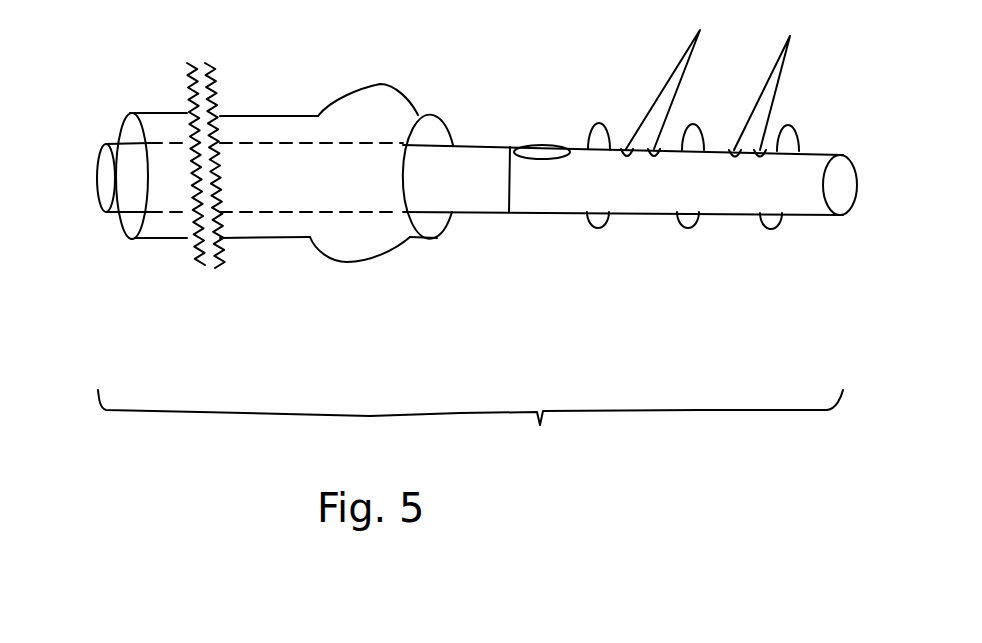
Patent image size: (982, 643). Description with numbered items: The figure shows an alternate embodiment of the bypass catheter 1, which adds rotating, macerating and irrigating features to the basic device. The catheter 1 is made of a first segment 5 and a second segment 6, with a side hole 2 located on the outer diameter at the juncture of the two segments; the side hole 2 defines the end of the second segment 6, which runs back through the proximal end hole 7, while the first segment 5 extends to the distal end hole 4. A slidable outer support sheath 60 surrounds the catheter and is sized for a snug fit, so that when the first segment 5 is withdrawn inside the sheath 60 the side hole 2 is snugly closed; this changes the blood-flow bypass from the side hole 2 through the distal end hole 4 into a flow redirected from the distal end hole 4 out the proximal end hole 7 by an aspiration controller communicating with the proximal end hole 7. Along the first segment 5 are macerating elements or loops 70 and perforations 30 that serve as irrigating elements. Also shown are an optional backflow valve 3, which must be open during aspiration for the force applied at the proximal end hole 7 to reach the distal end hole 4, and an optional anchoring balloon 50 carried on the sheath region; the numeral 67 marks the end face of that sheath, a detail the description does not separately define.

The bypass catheter 1 is at (470, 427).
The side hole 2 is at (543, 152).
The backflow valve 3 is at (510, 190).
The distal end hole 4 is at (840, 170).
The first segment 5 is at (805, 216).
The second segment 6 is at (106, 142).
The proximal end hole 7 is at (103, 177).
The perforations 30 is at (716, 81).
The anchoring balloon 50 is at (380, 83).
The slidable outer support sheath 60 is at (182, 241).
The sleeve end face 67 is at (132, 231).
The macerating loops 70 is at (602, 116).